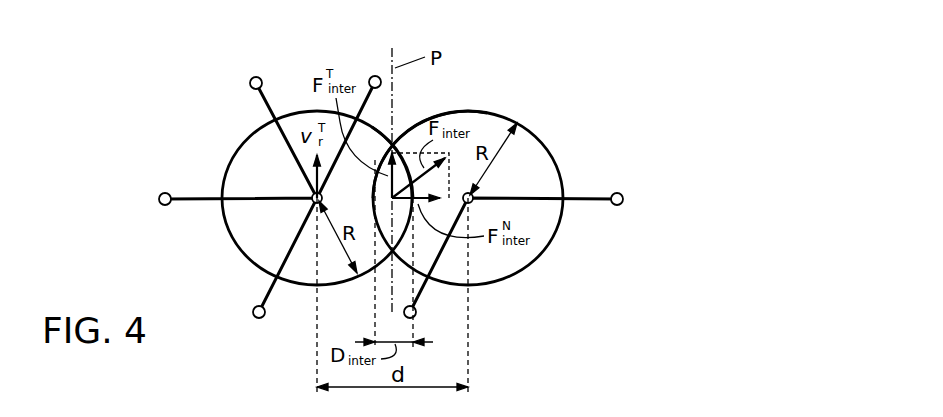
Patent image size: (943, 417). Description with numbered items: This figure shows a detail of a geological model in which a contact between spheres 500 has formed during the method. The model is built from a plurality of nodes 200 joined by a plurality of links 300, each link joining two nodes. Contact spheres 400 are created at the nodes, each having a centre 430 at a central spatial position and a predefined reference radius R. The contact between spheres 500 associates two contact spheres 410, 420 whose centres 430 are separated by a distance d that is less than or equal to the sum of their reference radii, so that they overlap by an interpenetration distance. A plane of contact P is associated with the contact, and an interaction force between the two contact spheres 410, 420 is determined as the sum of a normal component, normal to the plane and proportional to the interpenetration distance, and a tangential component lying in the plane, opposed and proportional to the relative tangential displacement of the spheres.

The nodes 200 is at (371, 78).
The links 300 is at (208, 198).
The contact spheres 400 is at (487, 113).
The first contact sphere 410 is at (232, 242).
The second contact sphere 420 is at (533, 265).
The centre 430 is at (471, 196).
The contact between spheres 500 is at (550, 83).